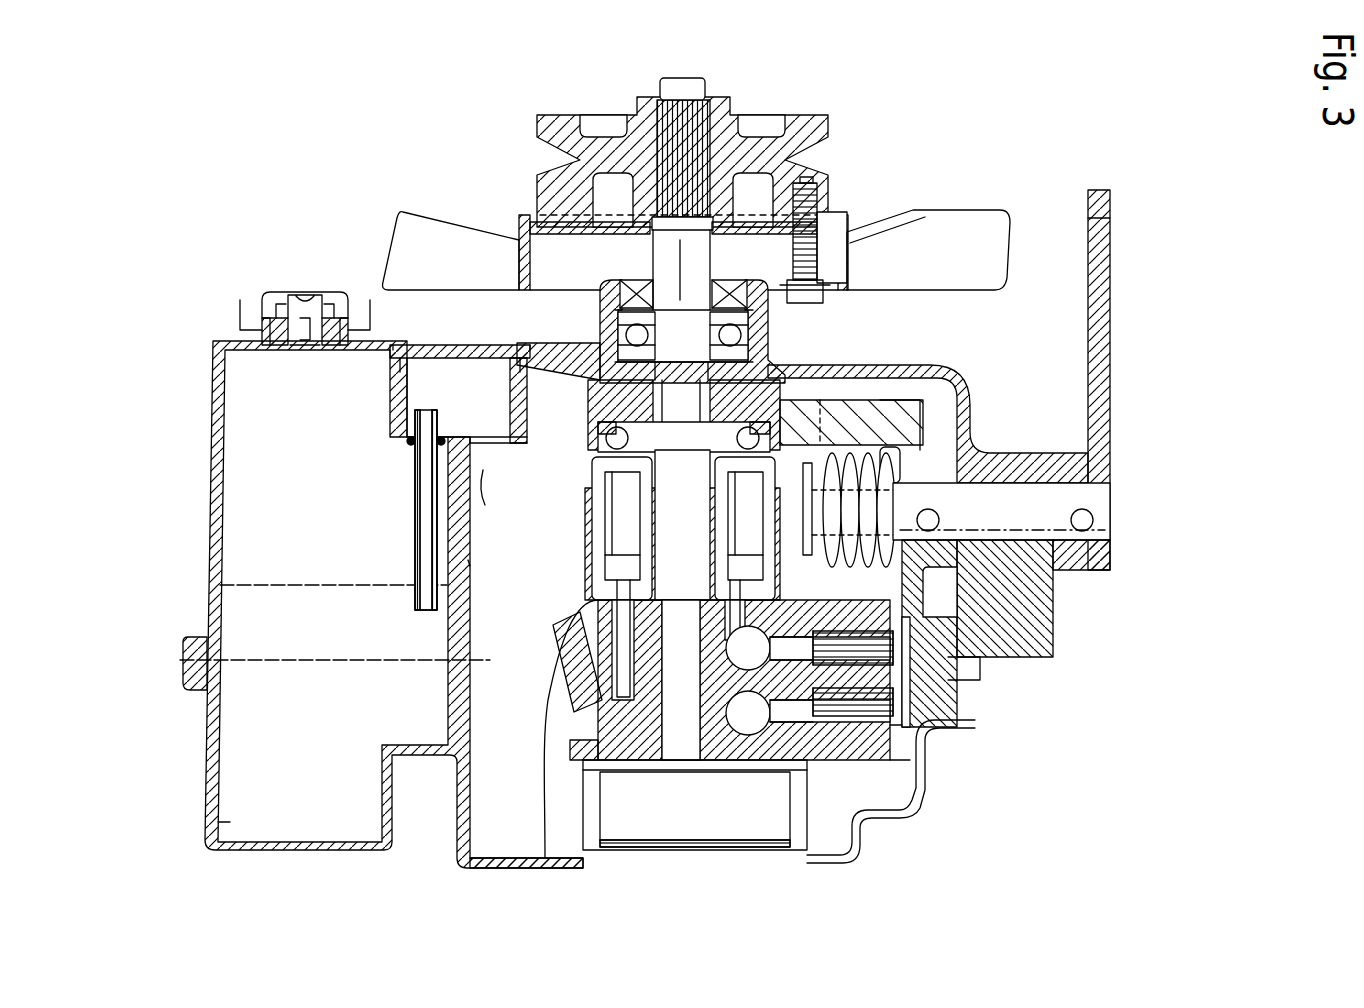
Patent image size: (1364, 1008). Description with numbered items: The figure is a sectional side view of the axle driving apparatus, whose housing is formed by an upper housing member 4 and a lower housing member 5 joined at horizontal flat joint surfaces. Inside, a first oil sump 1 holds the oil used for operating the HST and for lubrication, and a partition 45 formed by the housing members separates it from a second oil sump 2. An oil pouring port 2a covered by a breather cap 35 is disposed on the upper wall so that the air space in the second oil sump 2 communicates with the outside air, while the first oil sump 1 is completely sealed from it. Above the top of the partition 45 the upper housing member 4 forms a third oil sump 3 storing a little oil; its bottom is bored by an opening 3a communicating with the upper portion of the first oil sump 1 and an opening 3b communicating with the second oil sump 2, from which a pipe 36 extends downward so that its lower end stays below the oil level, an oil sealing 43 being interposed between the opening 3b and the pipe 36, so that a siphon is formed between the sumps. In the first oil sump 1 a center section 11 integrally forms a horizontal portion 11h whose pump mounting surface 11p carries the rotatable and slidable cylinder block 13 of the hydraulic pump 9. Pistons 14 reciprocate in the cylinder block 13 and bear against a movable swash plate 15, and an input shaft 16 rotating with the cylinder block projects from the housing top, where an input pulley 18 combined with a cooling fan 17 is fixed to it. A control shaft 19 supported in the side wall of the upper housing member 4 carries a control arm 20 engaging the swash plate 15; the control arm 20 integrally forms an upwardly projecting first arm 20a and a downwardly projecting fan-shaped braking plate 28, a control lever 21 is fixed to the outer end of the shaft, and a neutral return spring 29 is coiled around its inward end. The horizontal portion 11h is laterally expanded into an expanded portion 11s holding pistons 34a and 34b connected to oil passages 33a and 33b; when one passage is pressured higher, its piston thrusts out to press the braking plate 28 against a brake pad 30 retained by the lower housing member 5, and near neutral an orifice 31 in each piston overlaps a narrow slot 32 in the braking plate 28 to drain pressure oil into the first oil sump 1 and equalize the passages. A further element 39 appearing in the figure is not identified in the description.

The first oil sump 1 is at (516, 645).
The second oil sump 2 is at (282, 660).
The oil pouring port 2a is at (288, 348).
The third oil sump 3 is at (474, 428).
The opening 3a is at (485, 505).
The opening 3b is at (418, 446).
The upper housing member 4 is at (215, 432).
The lower housing member 5 is at (218, 822).
The hydraulic pump 9 is at (584, 494).
The center section 11 is at (596, 727).
The horizontal portion 11h is at (638, 770).
The pump mounting surface 11p is at (548, 832).
The expanded portion 11s is at (900, 815).
The cylinder block 13 is at (596, 530).
The pistons 14 is at (598, 472).
The movable swash plate 15 is at (578, 378).
The input shaft 16 is at (765, 360).
The cooling fan 17 is at (862, 228).
The input pulley 18 is at (750, 125).
The control shaft 19 is at (1100, 512).
The control arm 20 is at (923, 390).
The first arm 20a is at (842, 400).
The control lever 21 is at (1100, 192).
The braking plate 28 is at (918, 607).
The neutral return spring 29 is at (893, 470).
The brake pad 30 is at (935, 683).
The orifice 31 is at (915, 775).
The slot 32 is at (912, 738).
The oil passage 33a is at (716, 665).
The oil passage 33b is at (775, 720).
The piston 34a is at (850, 668).
The piston 34b is at (870, 722).
The breather cap 35 is at (305, 292).
The pipe 36 is at (415, 492).
The coil spring 39 is at (815, 548).
The oil sealing 43 is at (408, 437).
The partition 45 is at (468, 566).